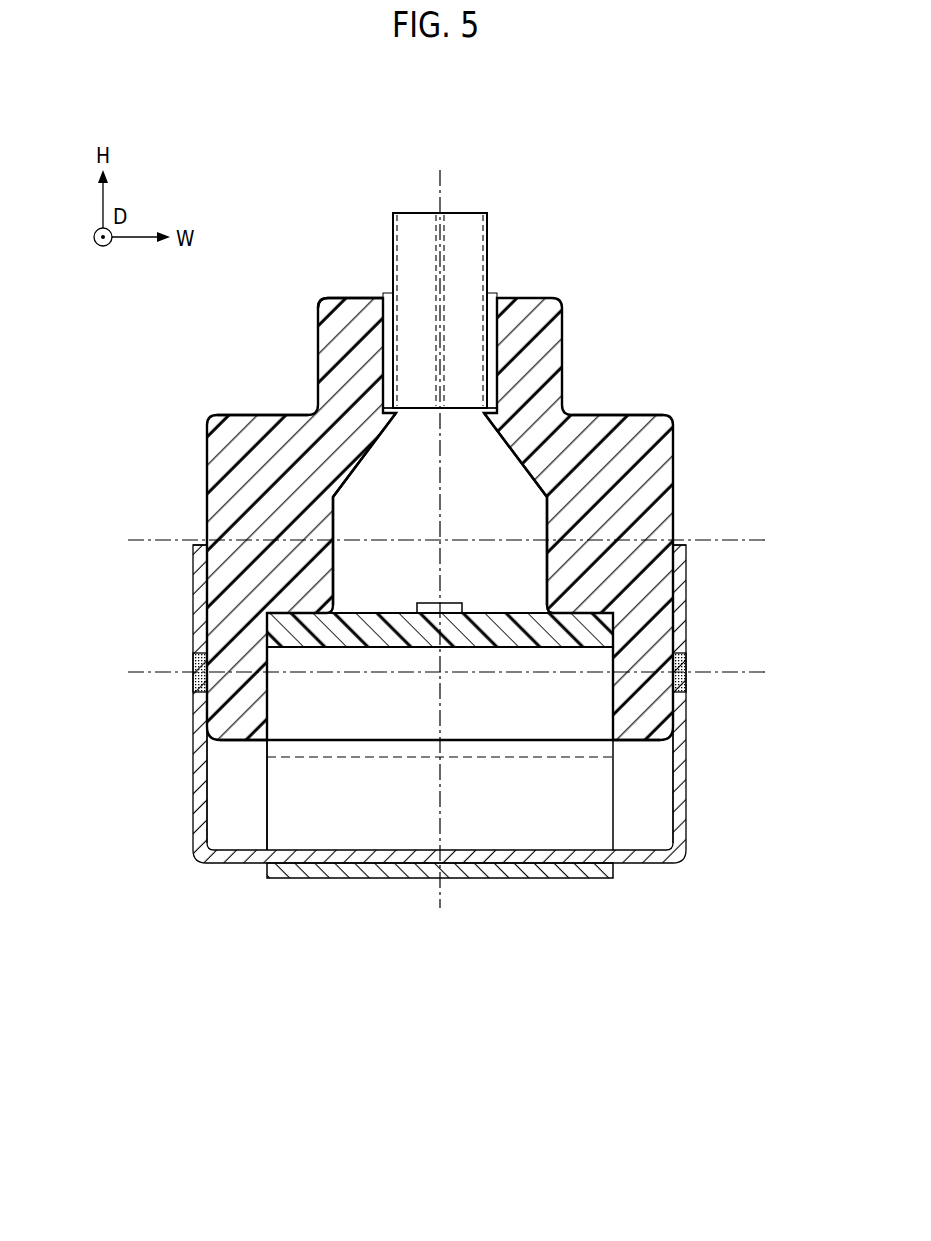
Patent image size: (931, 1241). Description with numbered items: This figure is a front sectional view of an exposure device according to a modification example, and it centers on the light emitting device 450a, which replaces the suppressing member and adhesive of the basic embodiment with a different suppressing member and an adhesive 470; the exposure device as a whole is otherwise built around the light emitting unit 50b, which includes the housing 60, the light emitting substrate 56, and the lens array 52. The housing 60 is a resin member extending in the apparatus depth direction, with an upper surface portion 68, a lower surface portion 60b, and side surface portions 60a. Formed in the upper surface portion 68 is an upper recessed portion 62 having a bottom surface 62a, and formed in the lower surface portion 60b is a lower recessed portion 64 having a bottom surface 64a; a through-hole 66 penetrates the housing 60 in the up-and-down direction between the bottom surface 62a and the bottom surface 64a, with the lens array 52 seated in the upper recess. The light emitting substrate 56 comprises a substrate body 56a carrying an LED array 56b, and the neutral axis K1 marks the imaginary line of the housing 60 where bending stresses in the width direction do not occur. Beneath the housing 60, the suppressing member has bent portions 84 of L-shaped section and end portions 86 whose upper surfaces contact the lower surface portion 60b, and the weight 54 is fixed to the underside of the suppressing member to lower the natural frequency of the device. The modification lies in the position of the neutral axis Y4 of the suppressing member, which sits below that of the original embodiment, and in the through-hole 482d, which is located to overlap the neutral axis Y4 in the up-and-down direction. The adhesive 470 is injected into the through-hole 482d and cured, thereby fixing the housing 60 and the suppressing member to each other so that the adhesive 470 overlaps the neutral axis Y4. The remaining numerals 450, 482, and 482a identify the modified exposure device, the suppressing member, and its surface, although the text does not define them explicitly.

The lens array 52 is at (465, 212).
The weight 54 is at (555, 880).
The light emitting substrate 56 is at (338, 658).
The substrate body 56a is at (387, 648).
The LED array 56b is at (417, 601).
The housing 60 is at (552, 298).
The side surface portion 60a is at (207, 455).
The lower surface portion 60b is at (634, 742).
The upper recessed portion 62 is at (480, 292).
The bottom surface of upper recessed portion 62a is at (482, 414).
The lower recessed portion 64 is at (612, 700).
The bottom surface of lower recessed portion 64a is at (548, 628).
The through-hole 66 is at (507, 519).
The upper surface portion 68 is at (353, 297).
The bent portion 84 is at (265, 810).
The end portion 86 is at (267, 745).
The support structure 450 is at (720, 1009).
The light emitting device 450a is at (672, 929).
The adhesive 470 is at (192, 680).
The cover 482 (cover member 480) 482 is at (680, 864).
The inner surface of cover 482a is at (207, 733).
The through-hole 482d is at (192, 652).
The light emitting unit 50b is at (637, 297).
The neutral axis K1 is at (748, 535).
The neutral axis Y4 is at (753, 677).